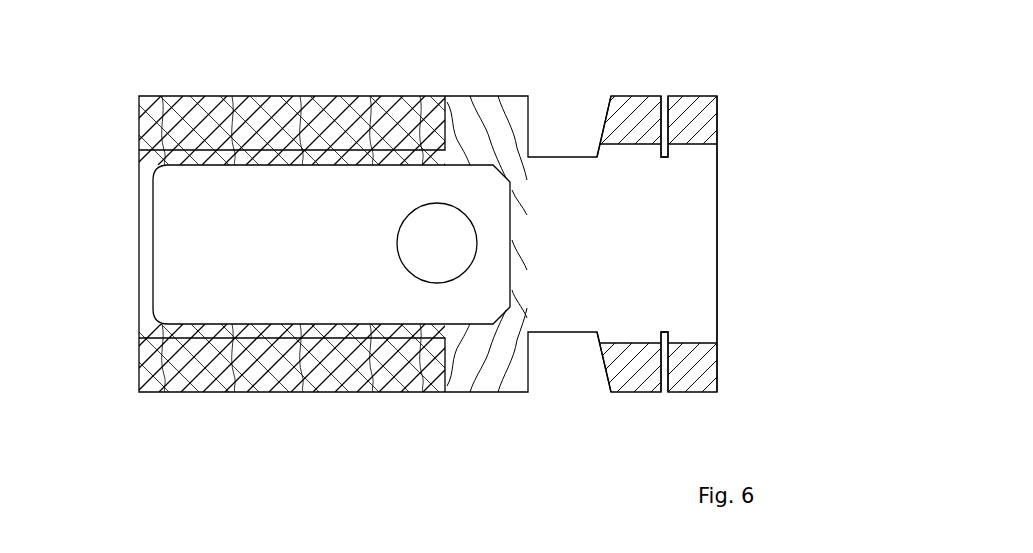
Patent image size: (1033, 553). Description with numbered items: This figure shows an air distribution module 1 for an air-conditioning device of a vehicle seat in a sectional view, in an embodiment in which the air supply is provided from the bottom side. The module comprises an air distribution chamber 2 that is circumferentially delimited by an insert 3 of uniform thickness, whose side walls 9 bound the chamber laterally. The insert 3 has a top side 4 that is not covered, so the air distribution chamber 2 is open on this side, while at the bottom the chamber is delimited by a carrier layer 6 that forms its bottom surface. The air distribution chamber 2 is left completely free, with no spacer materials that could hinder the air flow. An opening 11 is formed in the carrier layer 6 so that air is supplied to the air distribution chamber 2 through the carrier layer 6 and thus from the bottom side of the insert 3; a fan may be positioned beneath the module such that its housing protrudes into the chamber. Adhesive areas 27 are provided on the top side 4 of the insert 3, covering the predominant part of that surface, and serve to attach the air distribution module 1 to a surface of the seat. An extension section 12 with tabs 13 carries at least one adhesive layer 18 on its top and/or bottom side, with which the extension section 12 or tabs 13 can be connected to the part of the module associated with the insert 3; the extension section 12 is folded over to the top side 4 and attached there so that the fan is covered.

The air distribution module 1 is at (104, 92).
The air distribution chamber 2 is at (316, 190).
The insert 3 is at (468, 127).
The top side 4 is at (520, 120).
The carrier layer 6 is at (175, 235).
The side walls 9 is at (198, 165).
The opening 11 is at (441, 238).
The extension section 12 is at (622, 80).
The tab 13 is at (607, 118).
The adhesive layer 18 is at (696, 110).
The adhesive areas 27 is at (273, 118).